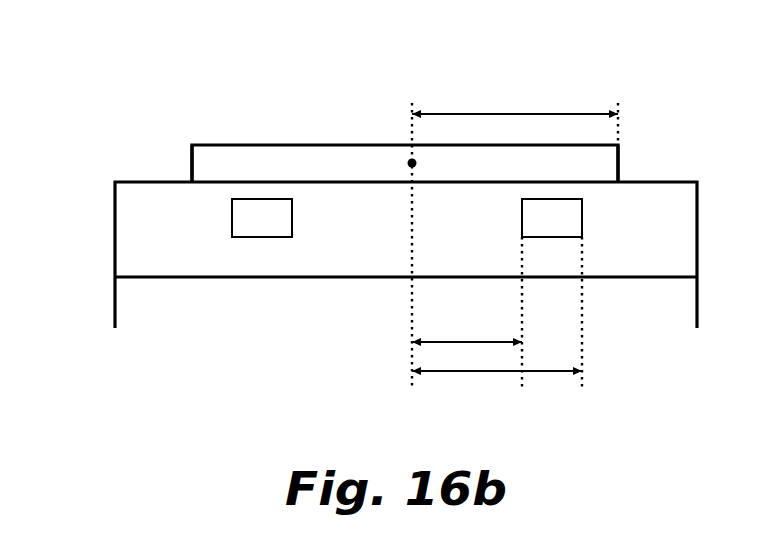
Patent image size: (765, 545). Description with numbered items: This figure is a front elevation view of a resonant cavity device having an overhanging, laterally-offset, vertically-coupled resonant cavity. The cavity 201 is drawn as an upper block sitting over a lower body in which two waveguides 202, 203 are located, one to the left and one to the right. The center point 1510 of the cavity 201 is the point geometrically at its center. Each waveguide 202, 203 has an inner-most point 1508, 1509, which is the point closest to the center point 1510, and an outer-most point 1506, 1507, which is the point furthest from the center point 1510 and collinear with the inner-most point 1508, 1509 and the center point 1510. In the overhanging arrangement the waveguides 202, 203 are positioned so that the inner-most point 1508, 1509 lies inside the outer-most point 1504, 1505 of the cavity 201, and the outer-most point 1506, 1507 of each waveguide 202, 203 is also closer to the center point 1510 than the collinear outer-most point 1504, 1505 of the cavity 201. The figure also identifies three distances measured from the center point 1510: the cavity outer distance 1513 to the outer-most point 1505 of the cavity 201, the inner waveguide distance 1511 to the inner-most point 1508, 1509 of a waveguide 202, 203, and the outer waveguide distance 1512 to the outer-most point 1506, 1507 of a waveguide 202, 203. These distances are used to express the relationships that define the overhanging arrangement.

The cavity 201 is at (255, 162).
The waveguide 202 is at (252, 223).
The waveguide 203 is at (573, 222).
The outer-most point of the cavity 1504 is at (192, 145).
The outer-most point of the cavity 1505 is at (622, 140).
The outer-most point of the waveguide 1506 is at (232, 237).
The outer-most point of the waveguide 1507 is at (582, 237).
The inner-most point of the waveguide 1508 is at (292, 237).
The inner-most point of the waveguide 1509 is at (522, 237).
The center point of the cavity 1510 is at (412, 163).
The distance Diw 1511 is at (447, 342).
The distance Dow 1512 is at (502, 371).
The distance Doc 1513 is at (575, 112).